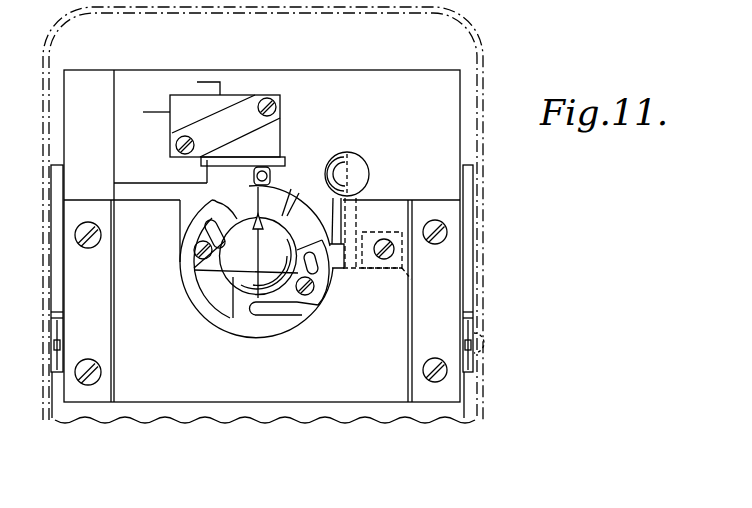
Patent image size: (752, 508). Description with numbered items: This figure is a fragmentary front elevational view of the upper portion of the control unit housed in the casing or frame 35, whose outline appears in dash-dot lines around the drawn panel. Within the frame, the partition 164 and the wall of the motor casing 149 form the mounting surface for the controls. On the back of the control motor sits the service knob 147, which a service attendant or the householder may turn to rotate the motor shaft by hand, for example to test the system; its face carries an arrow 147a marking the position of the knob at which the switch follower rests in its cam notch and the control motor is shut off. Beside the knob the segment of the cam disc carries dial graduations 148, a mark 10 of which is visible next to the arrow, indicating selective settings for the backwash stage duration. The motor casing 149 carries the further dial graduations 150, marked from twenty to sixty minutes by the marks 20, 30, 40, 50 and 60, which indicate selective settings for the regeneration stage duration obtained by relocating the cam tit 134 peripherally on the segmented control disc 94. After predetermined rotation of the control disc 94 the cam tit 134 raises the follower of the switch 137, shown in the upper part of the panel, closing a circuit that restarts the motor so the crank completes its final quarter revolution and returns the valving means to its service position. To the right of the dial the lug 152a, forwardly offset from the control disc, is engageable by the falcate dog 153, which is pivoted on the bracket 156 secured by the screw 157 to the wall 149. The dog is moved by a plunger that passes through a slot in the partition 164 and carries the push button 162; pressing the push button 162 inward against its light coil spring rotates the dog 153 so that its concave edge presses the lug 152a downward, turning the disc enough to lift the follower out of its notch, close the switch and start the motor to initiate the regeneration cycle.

The dial 10 is at (260, 240).
The dial housing ring 20 is at (201, 320).
The brine valve 30 is at (241, 333).
The right lobe of dial housing 40 is at (297, 323).
The housing side wall 50 is at (338, 280).
The actuating rod 60 is at (347, 229).
The control disc 94 is at (216, 295).
The cam tit 134 is at (331, 318).
The switch 137 is at (281, 129).
The knob 147 is at (273, 282).
The arrow 147a is at (194, 272).
The dial graduations 148 is at (278, 203).
The motor casing 149 is at (400, 327).
The dial graduations 150 is at (168, 298).
The lug 152a is at (343, 214).
The dog 153 is at (358, 198).
The bracket 156 is at (410, 279).
The screw 157 is at (394, 250).
The push button 162 is at (361, 162).
The partition 164 is at (440, 200).
The casing or frame 35 is at (481, 56).